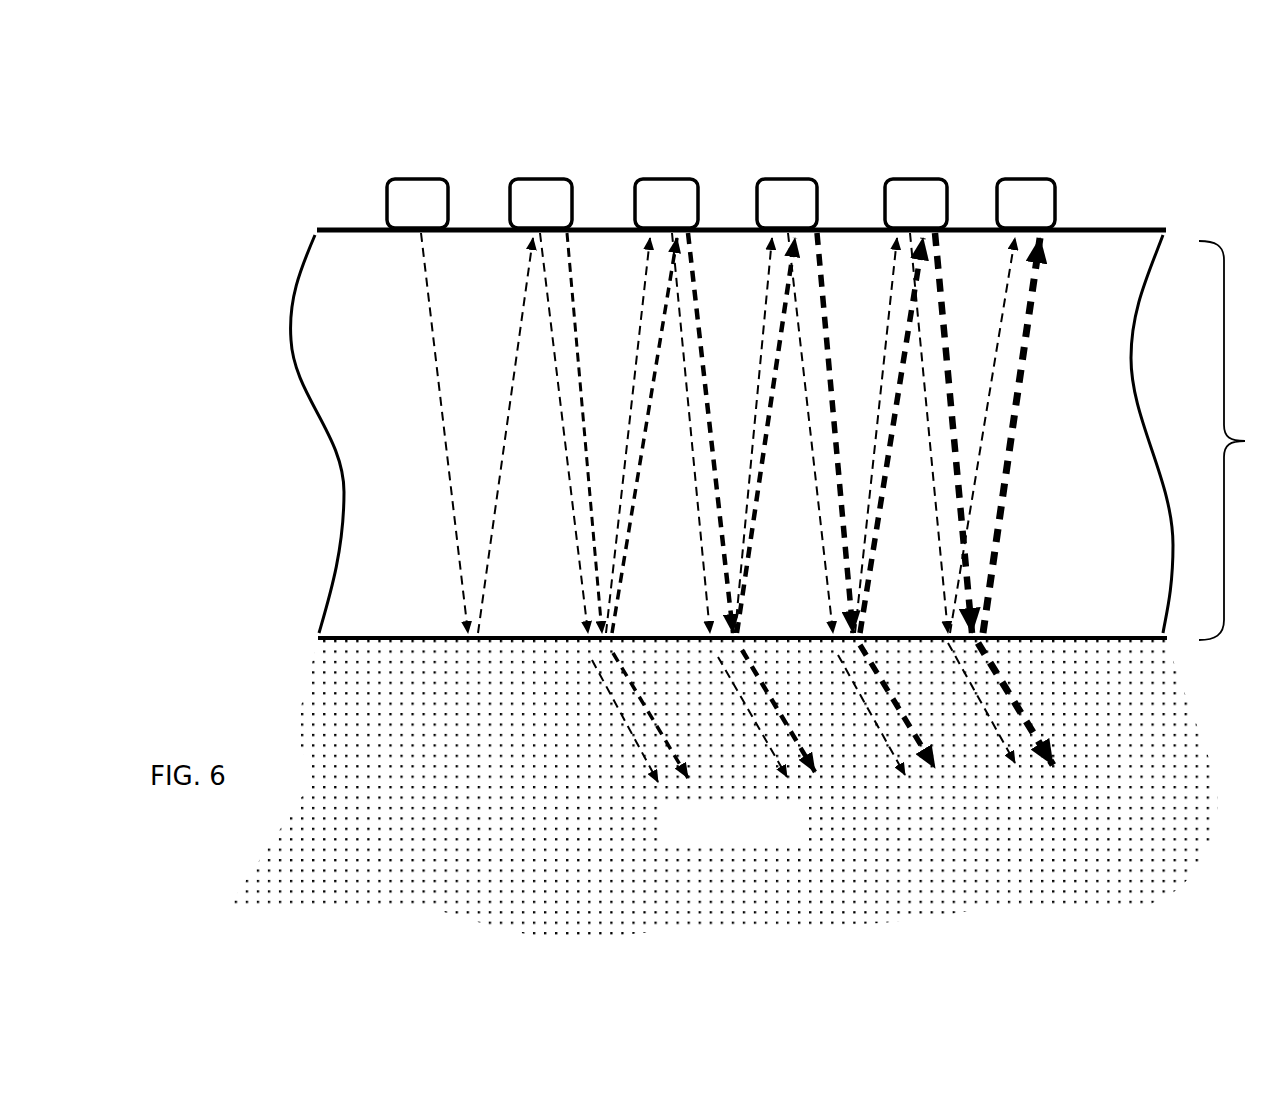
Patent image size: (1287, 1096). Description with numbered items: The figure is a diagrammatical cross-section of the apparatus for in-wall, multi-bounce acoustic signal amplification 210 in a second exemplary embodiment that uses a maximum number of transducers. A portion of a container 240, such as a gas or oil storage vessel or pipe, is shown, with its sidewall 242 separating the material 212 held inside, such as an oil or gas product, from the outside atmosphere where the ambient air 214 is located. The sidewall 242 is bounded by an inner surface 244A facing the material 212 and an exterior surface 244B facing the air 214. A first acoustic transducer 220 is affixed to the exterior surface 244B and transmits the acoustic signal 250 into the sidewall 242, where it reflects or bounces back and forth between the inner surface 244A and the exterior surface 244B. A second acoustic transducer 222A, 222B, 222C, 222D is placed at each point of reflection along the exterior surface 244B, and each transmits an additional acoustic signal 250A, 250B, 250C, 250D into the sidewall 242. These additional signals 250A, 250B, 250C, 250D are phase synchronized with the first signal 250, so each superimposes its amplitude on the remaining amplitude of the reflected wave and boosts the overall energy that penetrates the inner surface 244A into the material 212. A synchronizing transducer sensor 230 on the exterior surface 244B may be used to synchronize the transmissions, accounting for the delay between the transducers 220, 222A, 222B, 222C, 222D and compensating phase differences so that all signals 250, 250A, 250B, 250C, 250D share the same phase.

The apparatus for in-wall, multi-bounce acoustic signal amplification 210 is at (228, 106).
The material 212 is at (779, 843).
The ambient air 214 is at (750, 46).
The first acoustic transducer 220 is at (387, 200).
The second acoustic transducer 222A is at (541, 179).
The second acoustic transducer 222B is at (660, 179).
The second acoustic transducer 222C is at (785, 179).
The second acoustic transducer 222D is at (911, 179).
The synchronizing transducer sensor 230 is at (1027, 179).
The container 240 is at (1128, 145).
The sidewall 242 is at (1243, 440).
The inner surface 244A is at (1106, 648).
The exterior surface 244B is at (1125, 225).
The acoustic signal 250 is at (423, 331).
The additional acoustic signal 250A is at (597, 353).
The additional acoustic signal 250B is at (707, 338).
The additional acoustic signal 250C is at (842, 333).
The additional acoustic signal 250D is at (952, 338).